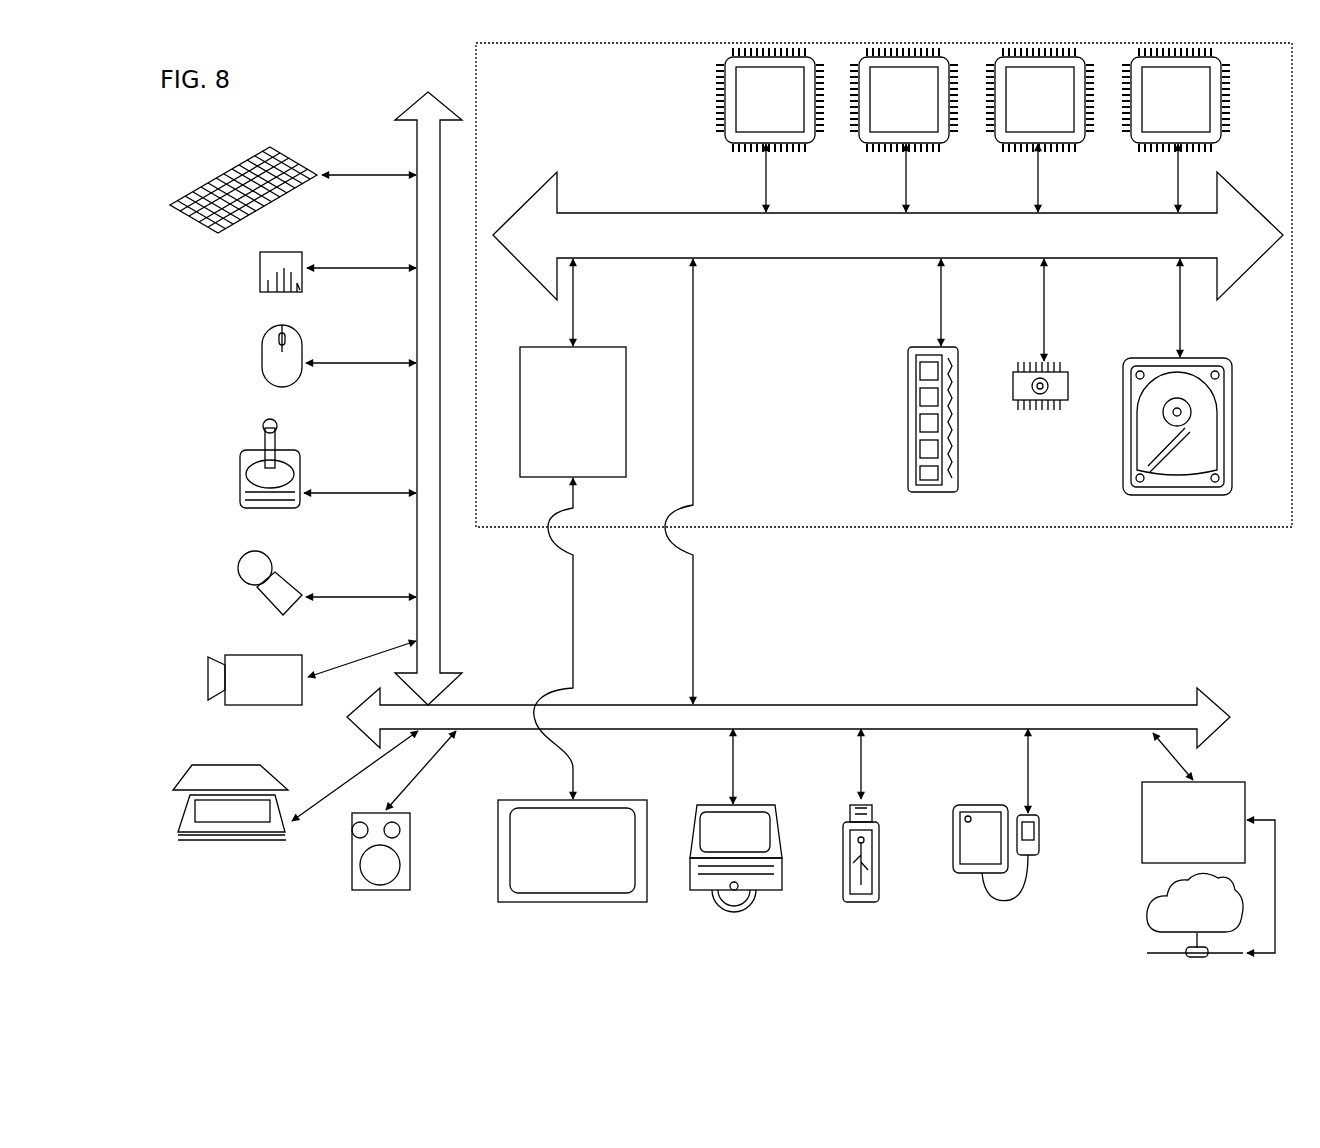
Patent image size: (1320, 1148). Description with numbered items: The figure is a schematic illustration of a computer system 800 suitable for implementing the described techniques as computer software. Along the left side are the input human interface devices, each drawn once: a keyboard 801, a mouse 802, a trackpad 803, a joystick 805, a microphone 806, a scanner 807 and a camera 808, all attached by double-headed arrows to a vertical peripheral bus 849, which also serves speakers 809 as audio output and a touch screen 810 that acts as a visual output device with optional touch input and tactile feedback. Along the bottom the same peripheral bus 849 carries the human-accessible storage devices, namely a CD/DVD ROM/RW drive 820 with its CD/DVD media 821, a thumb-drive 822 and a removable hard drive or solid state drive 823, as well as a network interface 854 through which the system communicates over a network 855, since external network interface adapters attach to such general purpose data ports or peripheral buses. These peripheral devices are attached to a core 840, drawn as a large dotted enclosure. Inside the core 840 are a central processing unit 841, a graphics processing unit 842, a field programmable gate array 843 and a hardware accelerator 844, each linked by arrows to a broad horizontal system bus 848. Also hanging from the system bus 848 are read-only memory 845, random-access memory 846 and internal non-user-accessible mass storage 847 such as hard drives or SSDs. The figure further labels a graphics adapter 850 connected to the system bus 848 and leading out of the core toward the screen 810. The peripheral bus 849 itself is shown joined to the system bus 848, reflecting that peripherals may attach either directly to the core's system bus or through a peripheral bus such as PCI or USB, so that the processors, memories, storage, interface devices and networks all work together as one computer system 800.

The computer system 800 is at (288, 80).
The keyboard 801 is at (176, 208).
The mouse 802 is at (252, 356).
The trackpad 803 is at (256, 282).
The joystick 805 is at (240, 495).
The microphone 806 is at (238, 570).
The scanner 807 is at (176, 824).
The camera 808 is at (212, 682).
The speakers 809 is at (385, 892).
The touch screen 810 is at (573, 903).
The CD/DVD ROM/RW 820 is at (772, 891).
The CD/DVD media 821 is at (722, 893).
The thumb-drive 822 is at (861, 903).
The removable hard drive or solid state drive 823 is at (958, 877).
The core 840 is at (870, 528).
The central processing unit 841 is at (770, 132).
The graphics processing unit 842 is at (904, 132).
The field programmable gate array 843 is at (1040, 132).
The hardware accelerator 844 is at (1176, 132).
The read-only memory 845 is at (1035, 410).
The random-access memory 846 is at (907, 418).
The internal mass storage 847 is at (1140, 357).
The system bus 848 is at (888, 236).
The peripheral bus 849 is at (398, 128).
The graphics adapter 850 is at (573, 368).
The network interface 854 is at (1208, 843).
The network 855 is at (1152, 924).